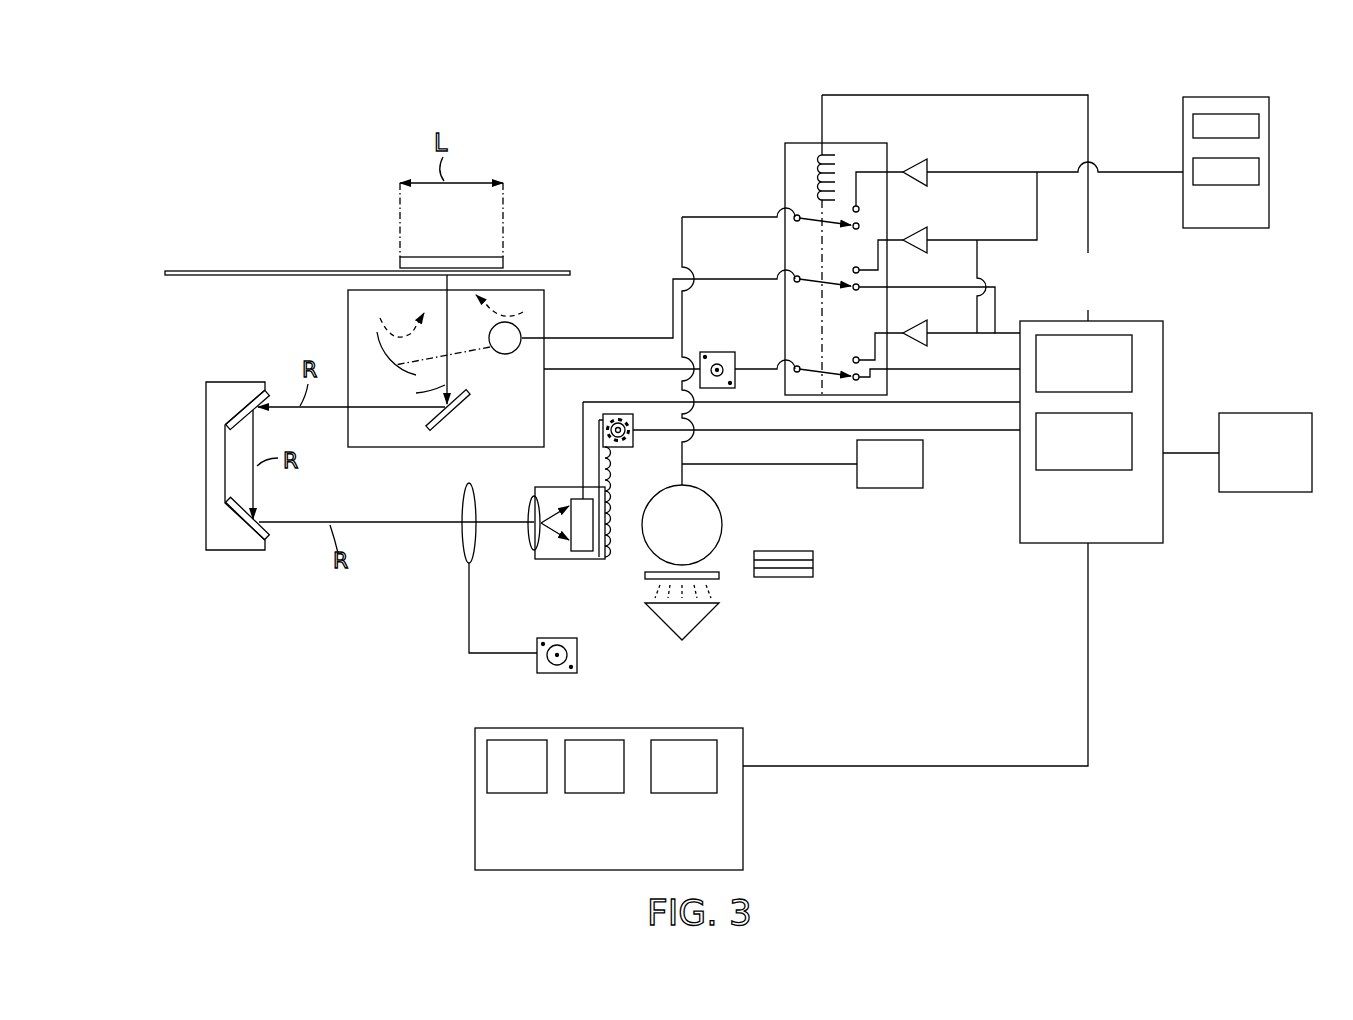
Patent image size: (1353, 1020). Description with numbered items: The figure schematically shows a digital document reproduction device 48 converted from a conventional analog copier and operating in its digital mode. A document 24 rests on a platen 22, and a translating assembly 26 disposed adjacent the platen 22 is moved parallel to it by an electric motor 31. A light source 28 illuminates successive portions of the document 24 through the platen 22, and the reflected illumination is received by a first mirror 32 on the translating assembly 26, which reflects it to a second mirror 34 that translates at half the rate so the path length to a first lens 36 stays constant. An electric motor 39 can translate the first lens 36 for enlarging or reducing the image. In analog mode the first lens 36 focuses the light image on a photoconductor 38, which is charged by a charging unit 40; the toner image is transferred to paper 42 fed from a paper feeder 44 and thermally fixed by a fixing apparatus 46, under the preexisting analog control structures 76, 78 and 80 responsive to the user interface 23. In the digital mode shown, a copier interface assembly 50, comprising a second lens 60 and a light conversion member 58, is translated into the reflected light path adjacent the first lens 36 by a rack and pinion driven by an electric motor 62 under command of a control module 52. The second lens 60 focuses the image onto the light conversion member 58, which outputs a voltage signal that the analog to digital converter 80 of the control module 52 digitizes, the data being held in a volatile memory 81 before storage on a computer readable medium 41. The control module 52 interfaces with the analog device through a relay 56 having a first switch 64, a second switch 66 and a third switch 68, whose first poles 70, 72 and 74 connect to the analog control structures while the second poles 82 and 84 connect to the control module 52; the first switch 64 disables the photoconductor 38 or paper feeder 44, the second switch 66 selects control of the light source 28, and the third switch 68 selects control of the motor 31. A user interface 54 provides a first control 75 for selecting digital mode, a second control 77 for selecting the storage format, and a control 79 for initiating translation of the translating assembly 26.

The platen 22 is at (313, 271).
The user interface 23 is at (1270, 126).
The document 24 is at (446, 257).
The translating assembly 26 is at (546, 318).
The light source 28 is at (506, 355).
The electric motor 31 is at (708, 352).
The first mirror 32 is at (447, 420).
The second mirror 34 is at (206, 497).
The first lens 36 is at (460, 542).
The photoconductor 38 is at (718, 505).
The electric motor 39 is at (578, 666).
The charging unit 40 is at (923, 466).
The computer readable medium 41 is at (1254, 413).
The paper 42 is at (746, 566).
The paper feeder 44 is at (814, 552).
The fixing apparatus 46 is at (706, 617).
The digital document reproduction device 48 is at (387, 620).
The copier interface assembly 50 is at (572, 560).
The control module 52 is at (1126, 321).
The user interface 54 is at (492, 728).
The relay 56 is at (856, 143).
The light conversion member 58 is at (576, 498).
The second lens 60 is at (526, 548).
The electric motor 62 is at (620, 448).
The first switch 64 is at (792, 214).
The second switch 66 is at (792, 275).
The third switch 68 is at (792, 366).
The first pole 70 is at (870, 209).
The first pole 72 is at (854, 267).
The first pole 74 is at (856, 357).
The first control 75 is at (487, 765).
The analog control structure 76 is at (930, 160).
The second control 77 is at (590, 794).
The analog control structure 78 is at (930, 230).
The control 79 is at (688, 740).
The analog control structure / analog to digital converter 80 is at (935, 342).
The volatile memory 81 is at (1058, 471).
The second pole 82 is at (870, 287).
The second pole 84 is at (855, 382).